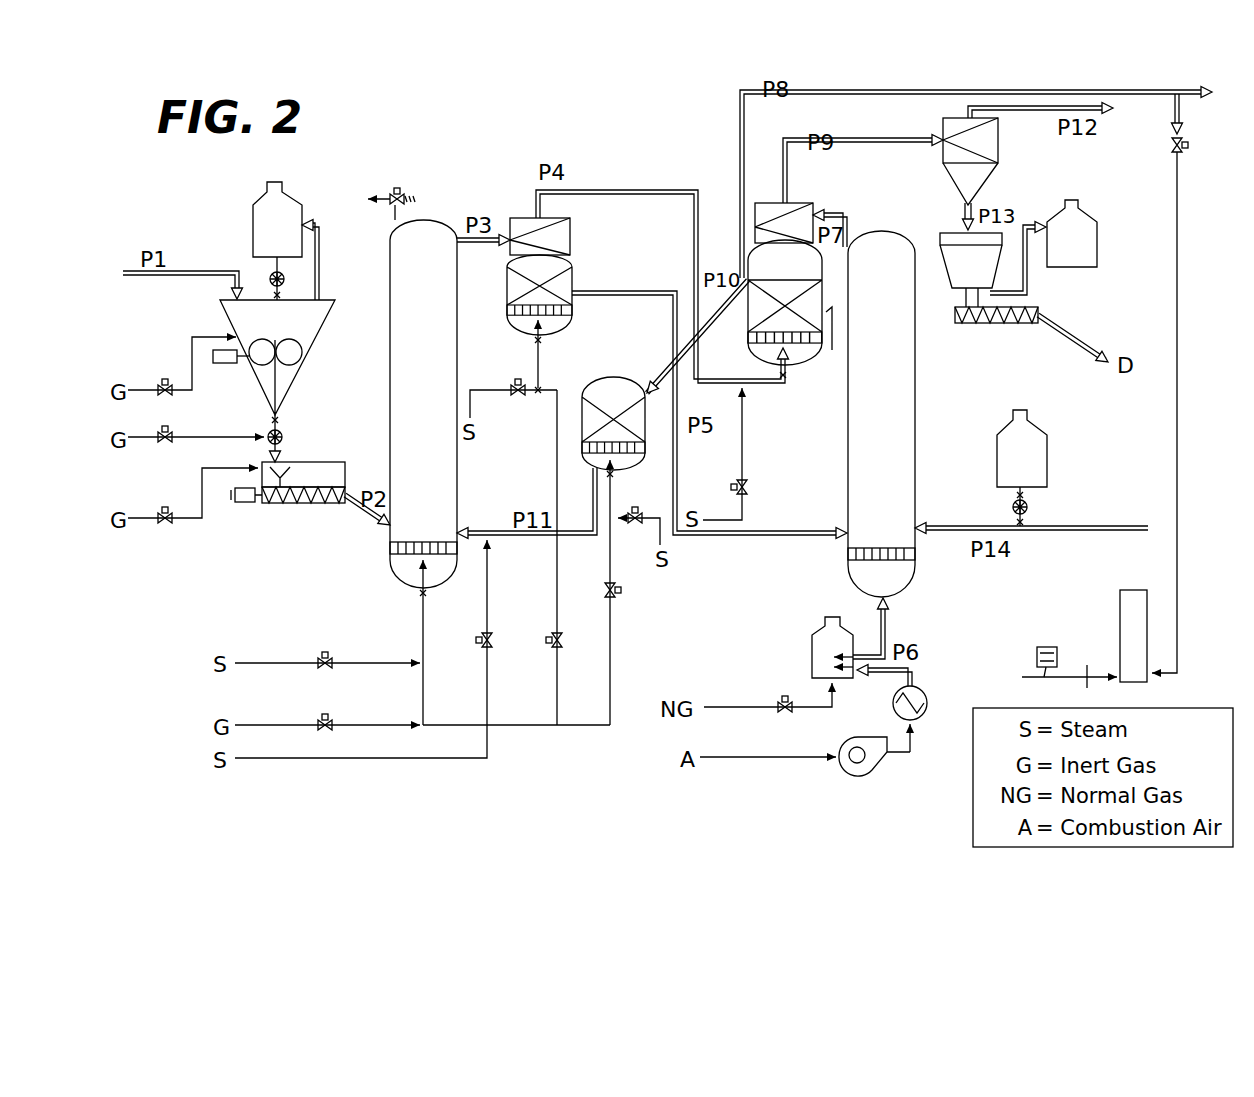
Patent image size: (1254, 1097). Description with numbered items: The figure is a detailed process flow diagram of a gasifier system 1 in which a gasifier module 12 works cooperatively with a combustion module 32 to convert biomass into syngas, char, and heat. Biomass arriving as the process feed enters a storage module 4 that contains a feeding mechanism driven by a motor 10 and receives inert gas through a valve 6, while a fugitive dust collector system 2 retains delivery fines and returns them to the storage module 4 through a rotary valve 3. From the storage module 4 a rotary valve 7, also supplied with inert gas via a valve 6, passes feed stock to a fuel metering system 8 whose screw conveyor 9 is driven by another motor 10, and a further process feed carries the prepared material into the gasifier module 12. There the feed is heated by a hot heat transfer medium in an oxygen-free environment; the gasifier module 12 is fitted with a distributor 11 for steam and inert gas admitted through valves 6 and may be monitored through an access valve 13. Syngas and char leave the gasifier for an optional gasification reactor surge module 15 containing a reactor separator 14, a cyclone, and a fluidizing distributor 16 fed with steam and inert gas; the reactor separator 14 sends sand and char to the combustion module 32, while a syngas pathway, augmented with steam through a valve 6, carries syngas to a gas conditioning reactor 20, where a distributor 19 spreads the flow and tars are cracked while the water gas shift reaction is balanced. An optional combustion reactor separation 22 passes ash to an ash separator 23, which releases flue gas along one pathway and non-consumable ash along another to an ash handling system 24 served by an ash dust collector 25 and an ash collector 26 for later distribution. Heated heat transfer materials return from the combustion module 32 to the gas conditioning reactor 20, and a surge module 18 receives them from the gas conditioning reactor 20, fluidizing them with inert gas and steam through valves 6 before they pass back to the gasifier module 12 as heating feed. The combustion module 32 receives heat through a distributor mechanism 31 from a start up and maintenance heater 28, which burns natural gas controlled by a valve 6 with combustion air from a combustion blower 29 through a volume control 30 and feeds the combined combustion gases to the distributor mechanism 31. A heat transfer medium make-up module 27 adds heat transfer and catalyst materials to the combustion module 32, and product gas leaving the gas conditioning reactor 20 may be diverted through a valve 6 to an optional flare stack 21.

The gasifier system 1 is at (399, 128).
The fugitive dust collector system 2 is at (253, 215).
The rotary valve 3 is at (286, 276).
The storage module 4 is at (320, 330).
The valve 6 is at (163, 384).
The rotary valve 7 is at (286, 434).
The fuel metering system 8 is at (340, 462).
The screw conveyor 9 is at (276, 503).
The motor 10 is at (220, 363).
The distributor 11 is at (390, 548).
The gasifier module 12 is at (390, 262).
The access valve 13 is at (397, 192).
The reactor separator 14 is at (515, 218).
The gasification reactor surge module 15 is at (572, 275).
The fluidizing distributor 16 is at (507, 318).
The surge module 18 is at (600, 377).
The distributor 19 is at (796, 346).
The gas conditioning reactor 20 is at (815, 355).
The flare stack 21 is at (1120, 600).
The combustion reactor separation 22 is at (805, 203).
The ash separator 23 is at (998, 150).
The ash handling system 24 is at (945, 233).
The ash dust collector 25 is at (1097, 226).
The ash collector 26 is at (965, 323).
The heat transfer medium make-up module 27 is at (1047, 463).
The start up and maintenance heater 28 is at (812, 645).
The combustion blower 29 is at (860, 776).
The volume control 30 is at (927, 698).
The distributor mechanism 31 is at (848, 555).
The combustion module 32 is at (915, 392).